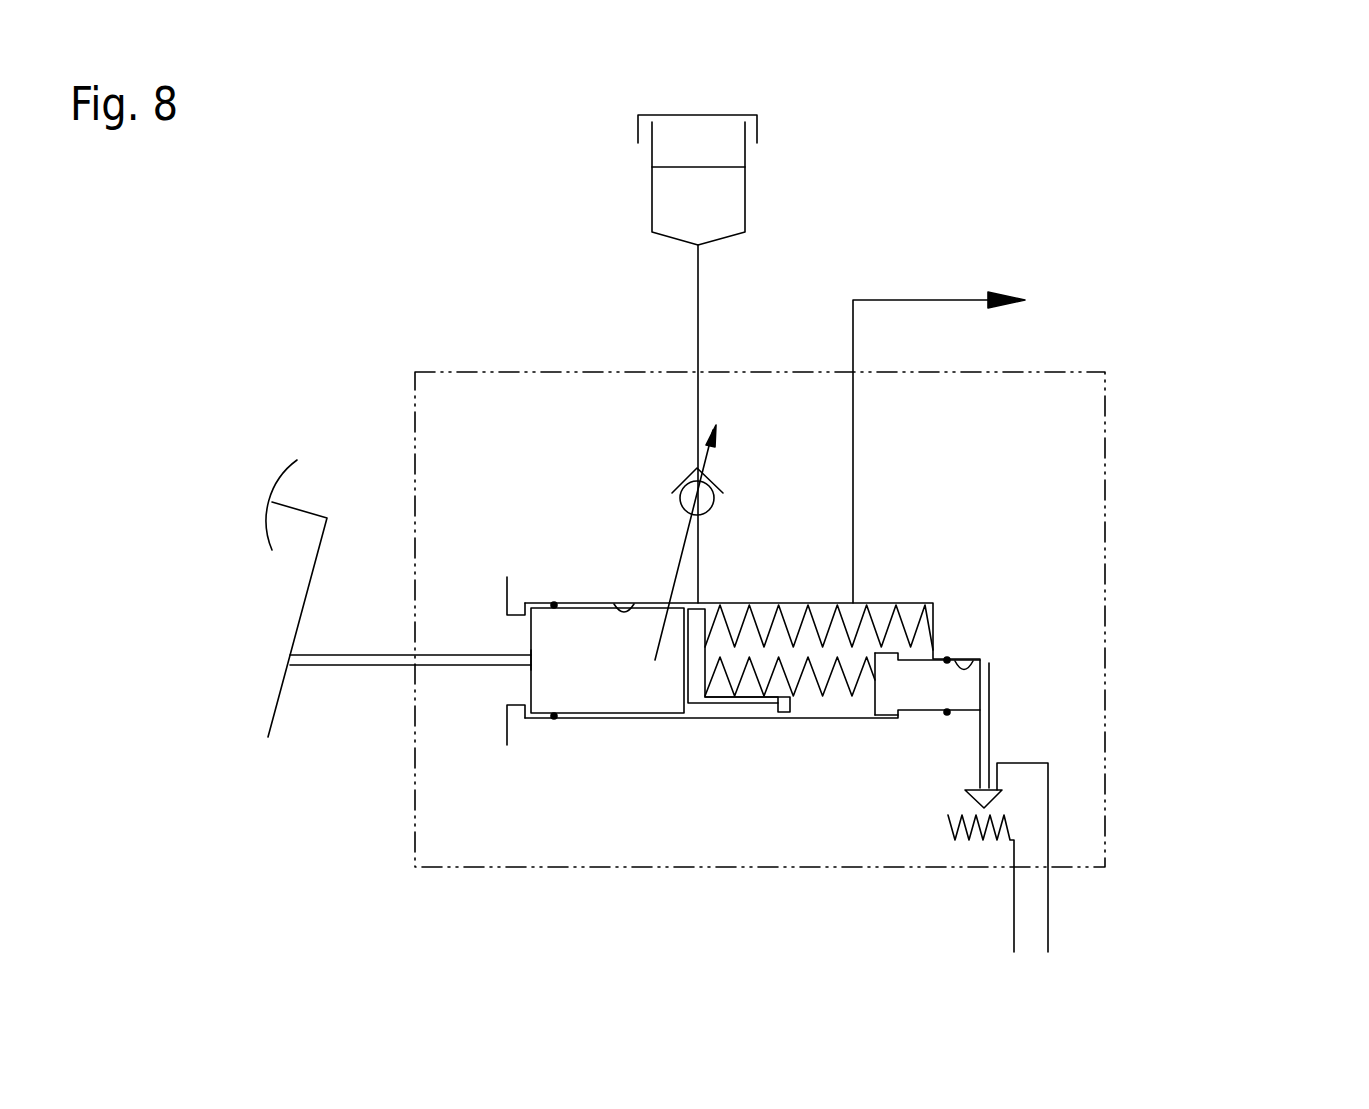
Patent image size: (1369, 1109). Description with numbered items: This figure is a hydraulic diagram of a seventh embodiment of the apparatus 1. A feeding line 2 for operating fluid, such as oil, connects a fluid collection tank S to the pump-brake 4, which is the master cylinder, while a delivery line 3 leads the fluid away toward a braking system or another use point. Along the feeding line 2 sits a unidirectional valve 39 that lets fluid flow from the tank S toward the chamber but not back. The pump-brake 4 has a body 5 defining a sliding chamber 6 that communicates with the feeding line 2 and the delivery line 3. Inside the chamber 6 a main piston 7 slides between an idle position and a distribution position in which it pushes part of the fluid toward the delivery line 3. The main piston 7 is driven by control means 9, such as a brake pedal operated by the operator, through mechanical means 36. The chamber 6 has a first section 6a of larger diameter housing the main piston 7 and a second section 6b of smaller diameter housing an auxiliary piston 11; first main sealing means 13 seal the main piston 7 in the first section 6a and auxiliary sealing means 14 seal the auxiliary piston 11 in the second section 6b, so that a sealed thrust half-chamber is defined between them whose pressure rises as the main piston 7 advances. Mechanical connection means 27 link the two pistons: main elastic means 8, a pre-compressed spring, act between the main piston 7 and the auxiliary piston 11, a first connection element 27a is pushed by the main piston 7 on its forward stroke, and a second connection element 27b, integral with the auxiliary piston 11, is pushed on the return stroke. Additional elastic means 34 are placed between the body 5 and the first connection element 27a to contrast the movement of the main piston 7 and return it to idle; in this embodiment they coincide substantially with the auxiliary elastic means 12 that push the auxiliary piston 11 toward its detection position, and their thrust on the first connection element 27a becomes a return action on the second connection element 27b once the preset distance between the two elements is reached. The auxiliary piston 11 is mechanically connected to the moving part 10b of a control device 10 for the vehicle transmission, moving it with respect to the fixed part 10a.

The apparatus 1 is at (1295, 172).
The fluid collection tank S is at (680, 193).
The feeding line 2 is at (697, 322).
The delivery line 3 is at (852, 332).
The unidirectional valve 39 is at (690, 470).
The control means 9 is at (306, 595).
The mechanical means 36 is at (362, 663).
The first main sealing means 13 is at (554, 604).
The body 5 is at (592, 604).
The pump-brake 4 is at (625, 732).
The main piston 7 is at (568, 687).
The first section 6a is at (633, 607).
The sliding chamber 6 is at (730, 724).
The first connection element 27a is at (697, 683).
The main elastic means 8 is at (770, 680).
The additional elastic means 34 is at (795, 603).
The auxiliary elastic means 12 is at (819, 578).
The mechanical connection means 27 is at (733, 712).
The second connection element 27b is at (836, 718).
The auxiliary piston 11 is at (933, 688).
The auxiliary sealing means 14 is at (947, 658).
The second section 6b is at (968, 665).
The moving part 10b is at (989, 735).
The control device 10 is at (1075, 845).
The fixed part 10a is at (1048, 838).